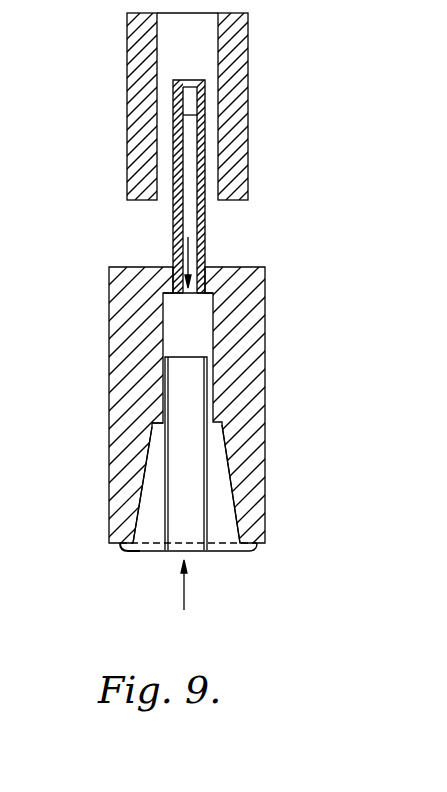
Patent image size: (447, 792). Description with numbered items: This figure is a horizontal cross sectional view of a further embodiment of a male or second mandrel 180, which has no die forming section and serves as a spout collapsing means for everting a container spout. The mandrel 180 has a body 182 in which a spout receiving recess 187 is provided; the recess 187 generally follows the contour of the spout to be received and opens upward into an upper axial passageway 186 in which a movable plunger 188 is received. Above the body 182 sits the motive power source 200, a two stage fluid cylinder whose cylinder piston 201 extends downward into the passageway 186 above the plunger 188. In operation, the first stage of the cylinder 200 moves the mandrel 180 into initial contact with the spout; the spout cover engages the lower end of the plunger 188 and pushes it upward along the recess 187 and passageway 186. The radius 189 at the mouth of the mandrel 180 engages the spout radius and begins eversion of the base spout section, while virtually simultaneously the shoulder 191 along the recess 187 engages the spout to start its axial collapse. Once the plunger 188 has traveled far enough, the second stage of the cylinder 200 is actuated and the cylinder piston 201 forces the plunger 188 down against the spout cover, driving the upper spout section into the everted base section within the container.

The mandrel 180 is at (223, 438).
The body 182 is at (245, 395).
The upper axial passageway 186 is at (240, 330).
The spout receiving recess 187 is at (228, 516).
The plunger 188 is at (175, 523).
The radius 189 is at (253, 551).
The shoulder 191 is at (150, 443).
The motive power source 200 is at (249, 105).
The cylinder piston 201 is at (188, 229).